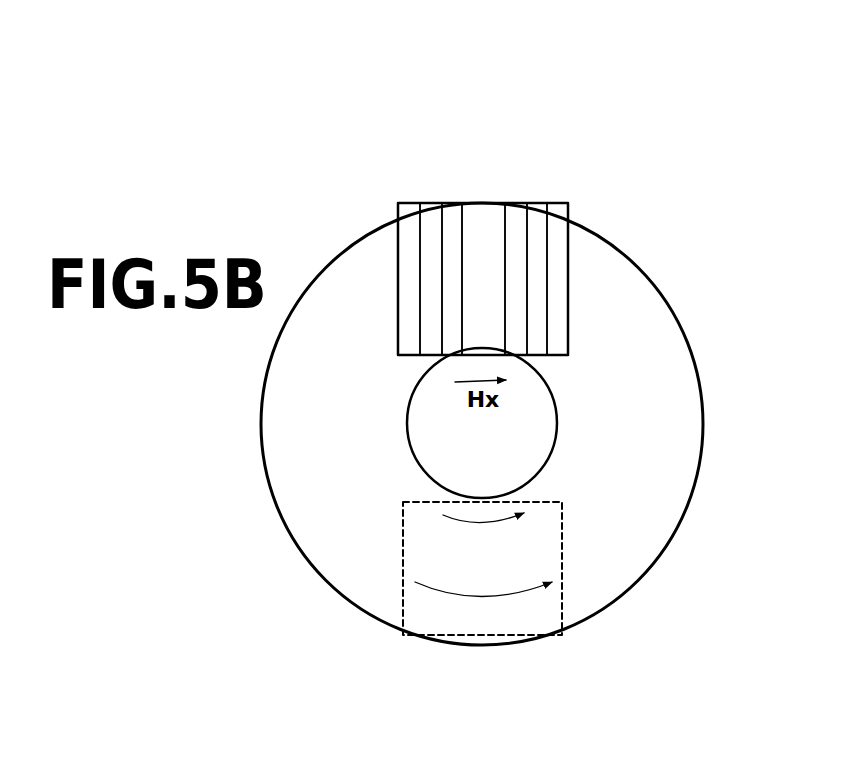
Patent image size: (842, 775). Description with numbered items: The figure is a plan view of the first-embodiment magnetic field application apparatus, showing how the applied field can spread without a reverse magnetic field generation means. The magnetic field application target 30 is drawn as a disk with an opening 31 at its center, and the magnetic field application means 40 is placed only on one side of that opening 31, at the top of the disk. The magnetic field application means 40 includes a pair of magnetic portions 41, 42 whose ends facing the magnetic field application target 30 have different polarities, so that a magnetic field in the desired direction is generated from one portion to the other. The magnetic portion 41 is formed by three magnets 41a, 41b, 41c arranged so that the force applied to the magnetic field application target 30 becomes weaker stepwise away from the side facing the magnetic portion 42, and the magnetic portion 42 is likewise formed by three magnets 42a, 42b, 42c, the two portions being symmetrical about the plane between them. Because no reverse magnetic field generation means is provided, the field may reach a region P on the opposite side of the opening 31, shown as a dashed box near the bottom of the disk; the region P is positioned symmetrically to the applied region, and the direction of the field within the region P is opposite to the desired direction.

The magnetic field application target 30 is at (281, 423).
The opening 31 is at (558, 427).
The magnetic field application means 40 is at (590, 72).
The magnetic portion 41 is at (455, 110).
The magnet 41a is at (452, 212).
The magnet 41b is at (431, 212).
The magnet 41c is at (410, 212).
The magnetic portion 42 is at (512, 112).
The magnet 42a is at (512, 212).
The magnet 42b is at (536, 212).
The magnet 42c is at (557, 212).
The region P is at (403, 535).